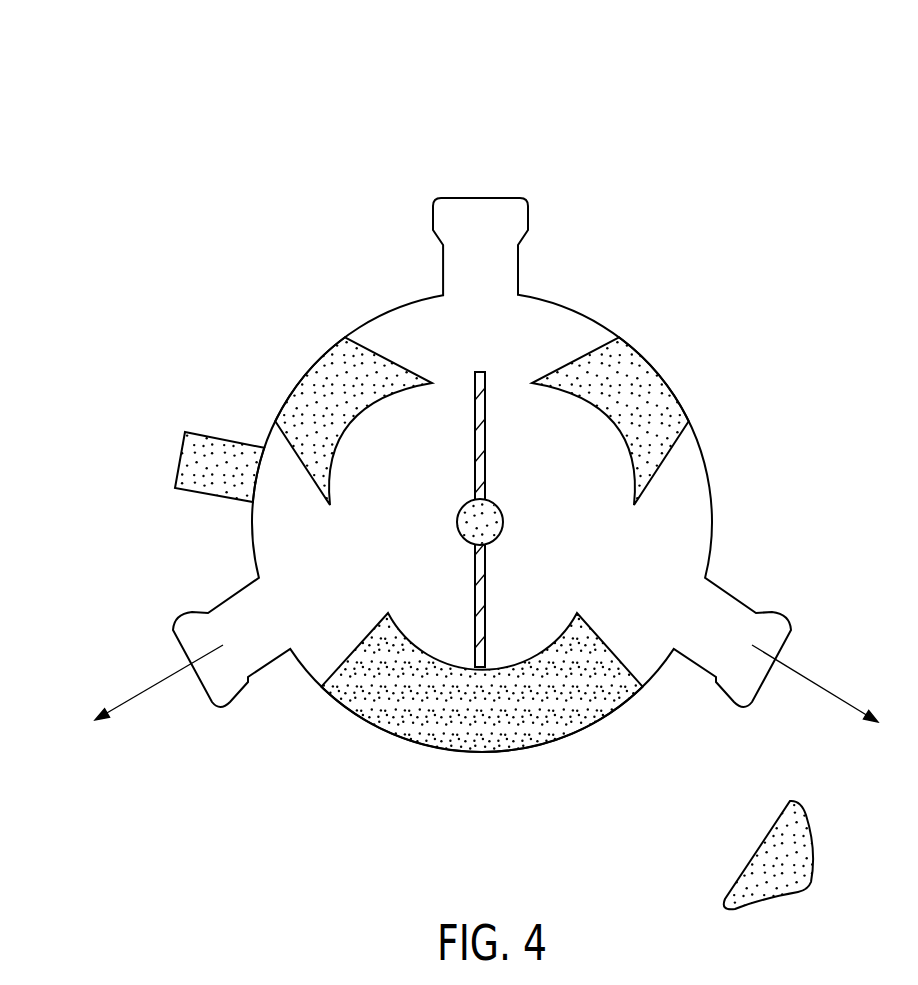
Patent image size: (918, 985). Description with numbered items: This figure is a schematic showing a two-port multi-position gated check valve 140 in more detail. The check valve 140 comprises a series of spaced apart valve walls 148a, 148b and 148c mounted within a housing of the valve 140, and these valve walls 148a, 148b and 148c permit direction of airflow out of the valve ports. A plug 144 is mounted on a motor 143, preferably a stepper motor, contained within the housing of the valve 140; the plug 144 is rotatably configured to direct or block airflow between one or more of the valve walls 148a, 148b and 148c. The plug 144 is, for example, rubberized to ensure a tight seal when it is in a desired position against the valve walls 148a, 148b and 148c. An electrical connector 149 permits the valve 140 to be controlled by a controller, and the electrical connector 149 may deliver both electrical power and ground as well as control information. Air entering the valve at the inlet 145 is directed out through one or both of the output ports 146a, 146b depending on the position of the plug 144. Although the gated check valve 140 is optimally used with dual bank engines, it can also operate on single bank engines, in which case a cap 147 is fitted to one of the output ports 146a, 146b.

The two-port multi-position gated check valve 140 is at (692, 83).
The motor 143 is at (461, 550).
The plug 144 is at (488, 465).
The inlet 145 is at (483, 192).
The output port 146a is at (127, 700).
The output port 146b is at (835, 692).
The cap 147 is at (812, 837).
The valve wall 148a is at (305, 392).
The valve wall 148b is at (657, 391).
The valve wall 148c is at (538, 732).
The electrical connector 149 is at (179, 441).